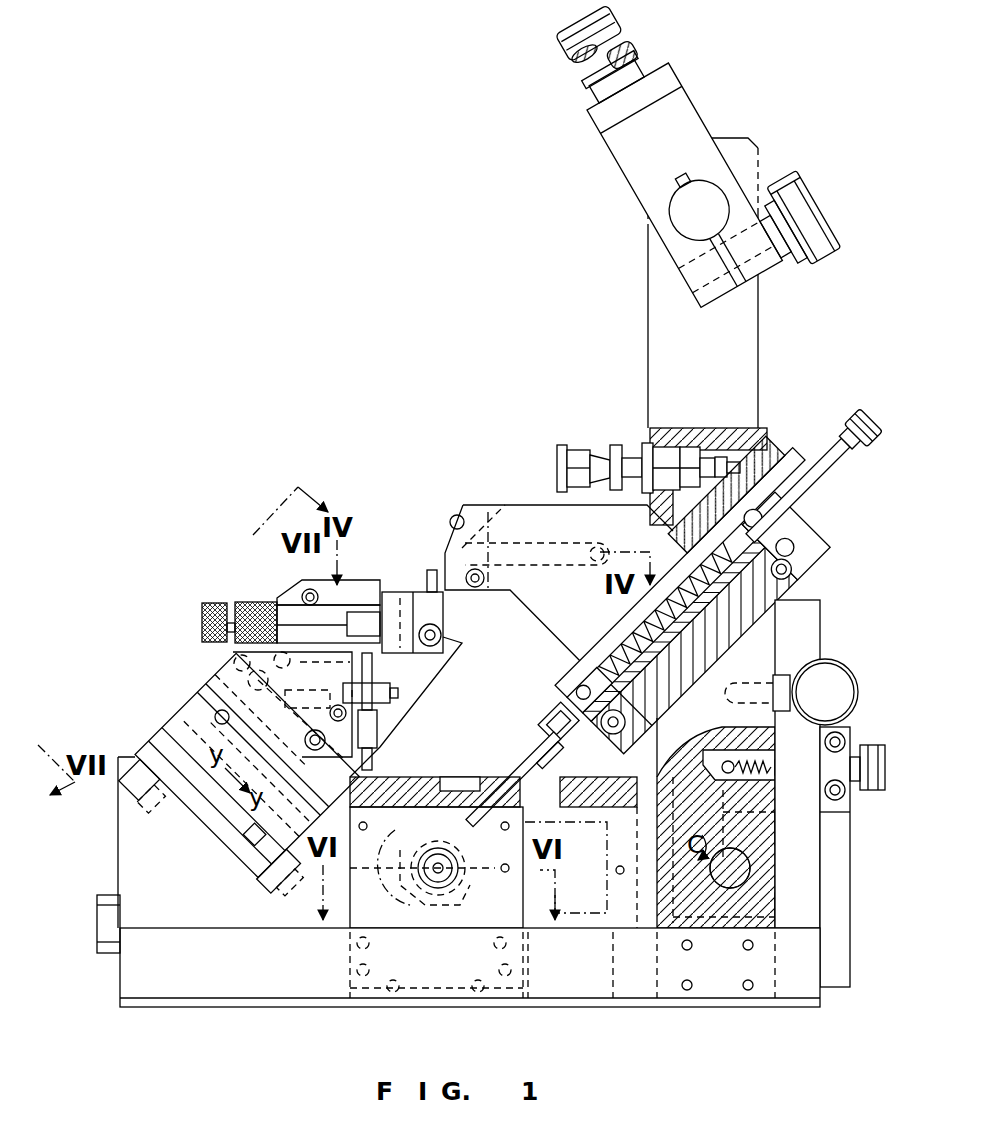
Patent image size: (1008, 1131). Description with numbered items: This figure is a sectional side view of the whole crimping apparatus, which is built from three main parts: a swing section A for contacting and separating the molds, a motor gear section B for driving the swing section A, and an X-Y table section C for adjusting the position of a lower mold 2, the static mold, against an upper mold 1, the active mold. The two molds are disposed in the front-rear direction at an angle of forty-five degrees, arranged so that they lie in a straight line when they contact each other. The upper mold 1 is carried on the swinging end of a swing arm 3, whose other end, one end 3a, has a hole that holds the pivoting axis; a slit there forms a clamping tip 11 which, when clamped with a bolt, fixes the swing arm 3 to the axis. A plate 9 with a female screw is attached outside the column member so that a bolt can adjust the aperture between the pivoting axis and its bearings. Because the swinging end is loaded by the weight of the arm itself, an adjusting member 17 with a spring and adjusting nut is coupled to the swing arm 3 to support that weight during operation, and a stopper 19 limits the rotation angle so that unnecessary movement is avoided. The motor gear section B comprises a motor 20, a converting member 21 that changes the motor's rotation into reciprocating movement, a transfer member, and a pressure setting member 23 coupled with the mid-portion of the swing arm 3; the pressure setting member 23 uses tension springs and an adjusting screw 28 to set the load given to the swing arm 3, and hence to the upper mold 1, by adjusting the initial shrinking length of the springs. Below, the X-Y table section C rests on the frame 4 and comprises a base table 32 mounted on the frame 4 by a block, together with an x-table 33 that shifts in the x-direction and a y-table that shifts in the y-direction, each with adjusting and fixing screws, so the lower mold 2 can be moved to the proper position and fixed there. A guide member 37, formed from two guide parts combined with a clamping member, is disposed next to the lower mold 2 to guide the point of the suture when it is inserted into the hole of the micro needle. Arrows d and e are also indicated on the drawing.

The upper mold 1 is at (430, 565).
The lower mold 2 is at (425, 582).
The swing arm 3 is at (522, 608).
The one end of the swing arm 3a is at (463, 500).
The frame 4 is at (552, 990).
The plate 9 is at (667, 605).
The clamping tip 11 is at (777, 847).
The adjusting member 17 is at (798, 780).
The stopper 19 is at (630, 420).
The motor 20 is at (393, 927).
The converting member 21 is at (448, 875).
The pressure setting member 23 is at (824, 537).
The adjusting screw 28 is at (836, 455).
The base table 32 is at (222, 828).
The x-table 33 is at (290, 850).
The guide member 37 is at (420, 558).
The swing section A is at (518, 478).
The motor gear section B is at (546, 698).
The X-Y table section C is at (212, 580).
The rod d is at (540, 778).
The pin e is at (556, 773).